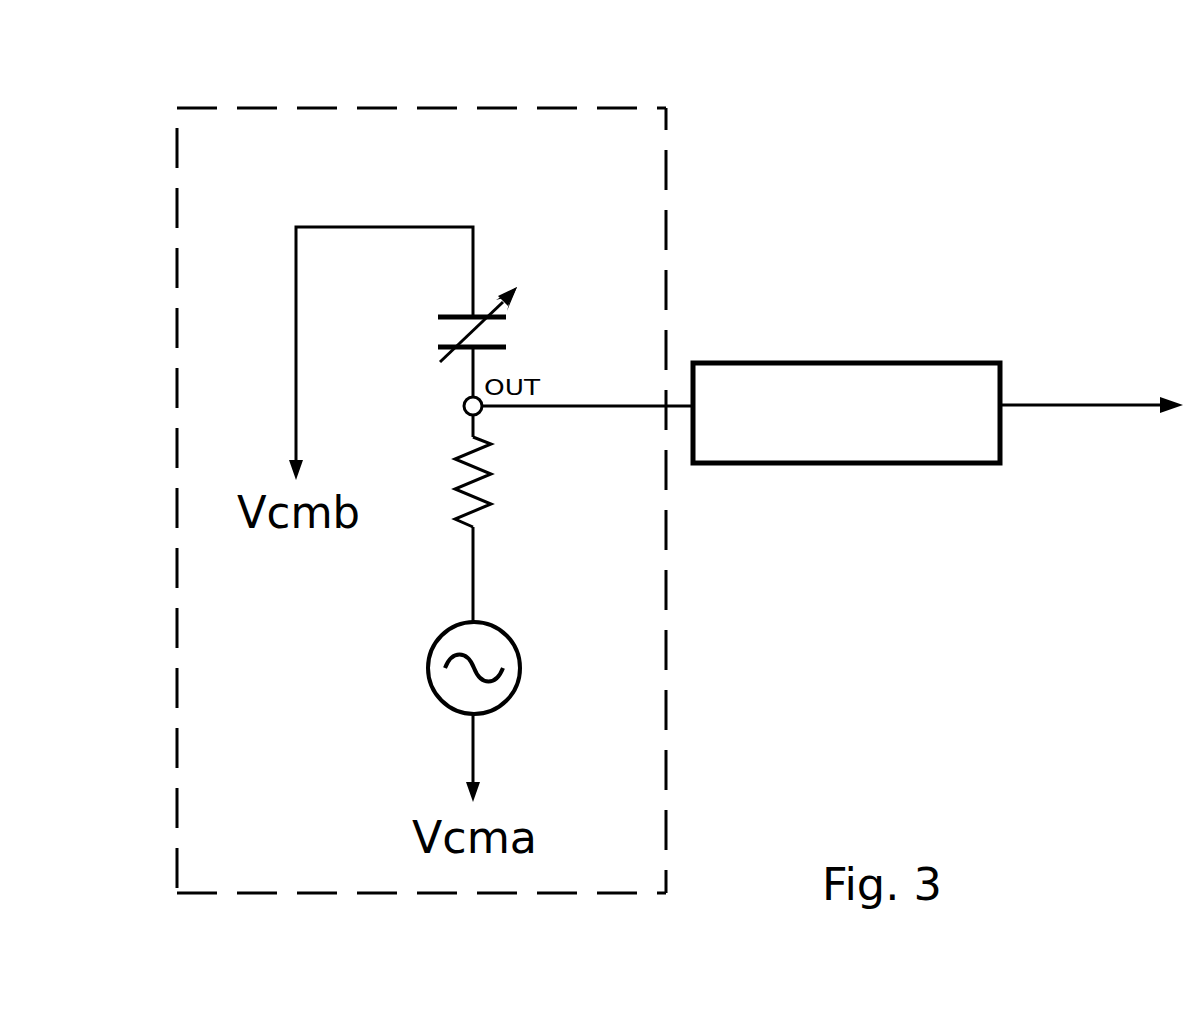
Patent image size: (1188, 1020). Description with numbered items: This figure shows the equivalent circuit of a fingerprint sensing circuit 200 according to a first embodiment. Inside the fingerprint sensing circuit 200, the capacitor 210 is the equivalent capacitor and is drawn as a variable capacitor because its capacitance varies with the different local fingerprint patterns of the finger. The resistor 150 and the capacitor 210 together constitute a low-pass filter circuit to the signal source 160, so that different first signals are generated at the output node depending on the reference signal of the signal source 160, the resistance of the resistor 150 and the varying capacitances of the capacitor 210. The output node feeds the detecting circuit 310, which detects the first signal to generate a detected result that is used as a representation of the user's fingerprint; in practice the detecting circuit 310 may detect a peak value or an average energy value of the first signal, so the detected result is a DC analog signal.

The fingerprint sensing circuit 200 is at (428, 107).
The capacitor 210 is at (499, 271).
The resistor 150 is at (509, 497).
The signal source 160 is at (519, 653).
The detecting circuit 310 is at (827, 361).